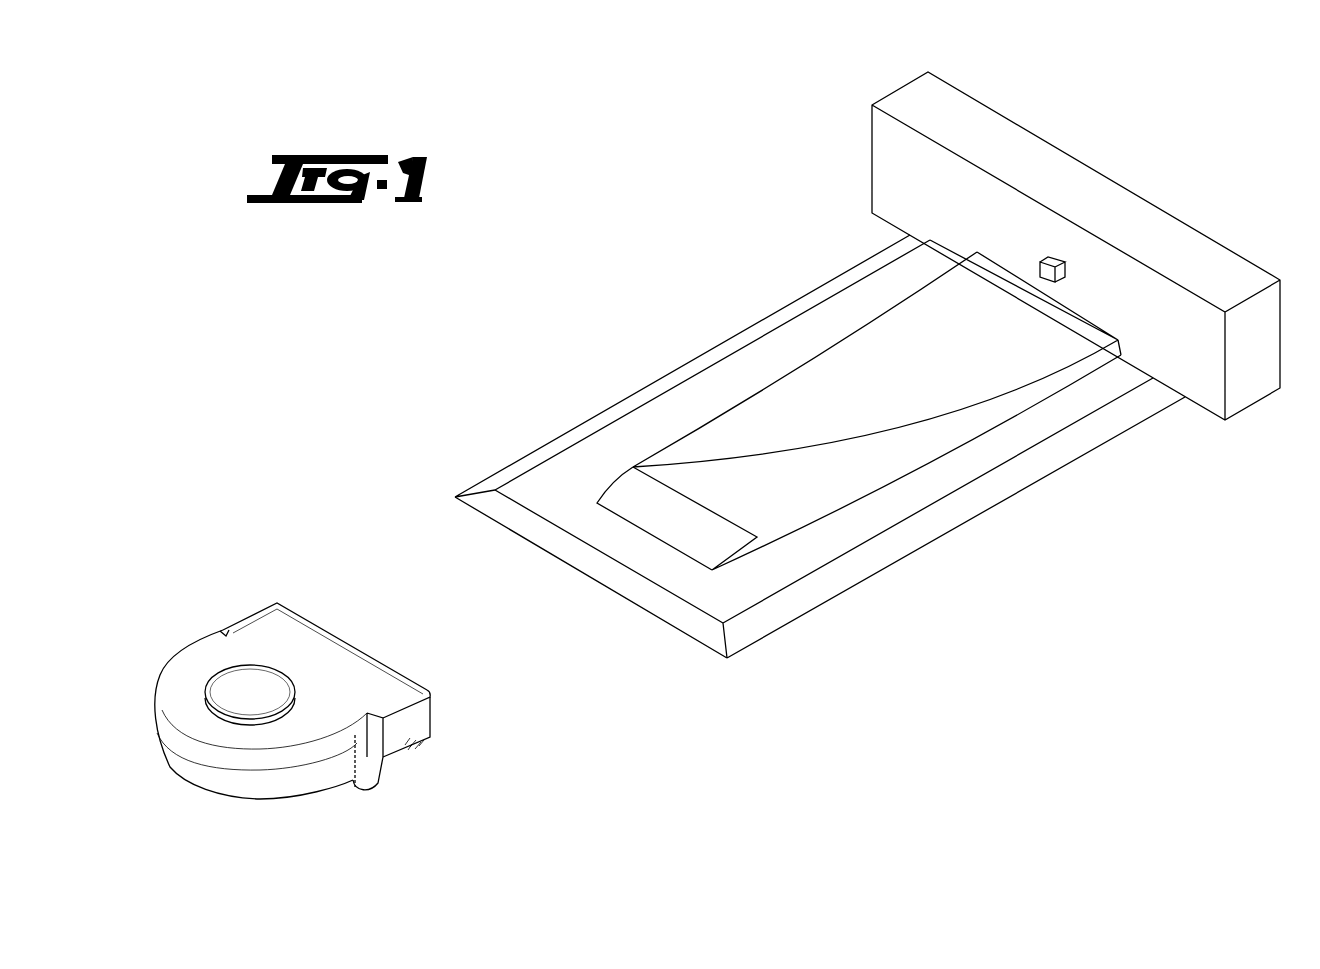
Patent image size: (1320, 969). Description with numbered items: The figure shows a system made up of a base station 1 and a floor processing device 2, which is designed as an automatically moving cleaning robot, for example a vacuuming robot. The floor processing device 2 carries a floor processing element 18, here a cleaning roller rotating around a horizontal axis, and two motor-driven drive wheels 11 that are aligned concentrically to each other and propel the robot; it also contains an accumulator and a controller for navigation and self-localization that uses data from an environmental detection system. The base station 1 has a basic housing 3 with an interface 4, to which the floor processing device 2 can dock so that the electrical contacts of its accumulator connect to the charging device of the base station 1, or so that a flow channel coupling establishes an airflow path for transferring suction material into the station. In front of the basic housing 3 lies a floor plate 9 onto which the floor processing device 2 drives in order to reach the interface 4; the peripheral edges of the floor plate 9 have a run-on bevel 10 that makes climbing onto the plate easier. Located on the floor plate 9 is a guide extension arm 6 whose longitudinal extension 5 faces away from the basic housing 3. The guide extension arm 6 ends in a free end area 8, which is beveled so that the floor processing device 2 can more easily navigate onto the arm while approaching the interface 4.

The base station 1 is at (1097, 152).
The floor processing device 2 is at (205, 610).
The basic housing 3 is at (922, 103).
The interface 4 is at (1040, 265).
The longitudinal extension 5 is at (987, 422).
The guide extension arm 6 is at (815, 395).
The end area 8 is at (633, 538).
The floor plate 9 is at (777, 565).
The run-on bevel 10 is at (623, 500).
The drive wheel 11 is at (360, 780).
The floor processing element 18 is at (420, 748).